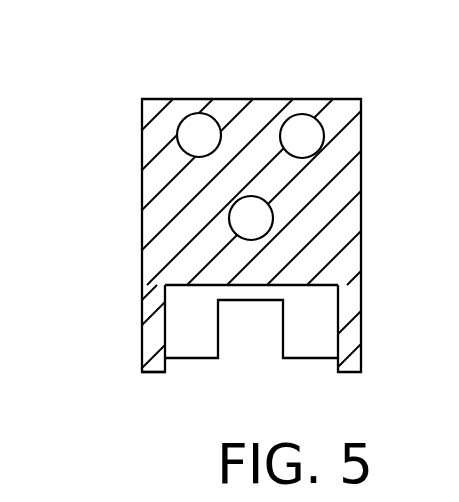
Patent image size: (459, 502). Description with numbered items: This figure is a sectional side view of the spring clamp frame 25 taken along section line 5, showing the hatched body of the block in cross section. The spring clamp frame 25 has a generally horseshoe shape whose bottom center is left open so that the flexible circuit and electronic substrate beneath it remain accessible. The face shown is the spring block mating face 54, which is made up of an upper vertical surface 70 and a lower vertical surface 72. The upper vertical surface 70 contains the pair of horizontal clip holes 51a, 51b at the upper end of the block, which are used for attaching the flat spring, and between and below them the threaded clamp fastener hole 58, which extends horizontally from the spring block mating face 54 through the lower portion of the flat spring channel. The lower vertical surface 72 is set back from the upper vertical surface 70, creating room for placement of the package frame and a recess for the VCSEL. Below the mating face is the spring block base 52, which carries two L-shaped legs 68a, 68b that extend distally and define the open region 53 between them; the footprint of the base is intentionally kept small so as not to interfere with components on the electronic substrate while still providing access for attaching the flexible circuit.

The section line 5 is at (190, 70).
The spring clamp frame 25 is at (100, 135).
The upper vertical surface 70 is at (163, 185).
The spring block mating face 54 is at (158, 213).
The clip hole 51a is at (205, 148).
The clip hole 51b is at (303, 145).
The threaded clamp fastener hole 58 is at (245, 225).
The spring block base 52 is at (140, 372).
The lower vertical surface 72 is at (185, 312).
The L-shaped leg 68a is at (148, 373).
The L-shaped leg 68b is at (348, 373).
The slot 53 is at (255, 318).